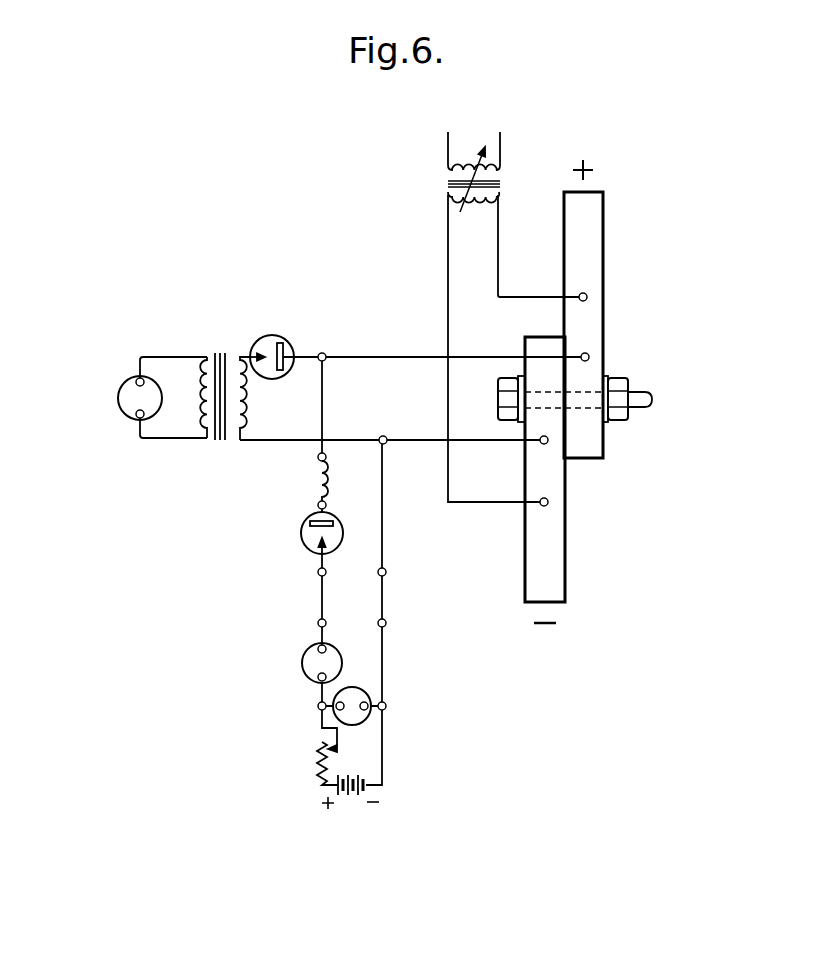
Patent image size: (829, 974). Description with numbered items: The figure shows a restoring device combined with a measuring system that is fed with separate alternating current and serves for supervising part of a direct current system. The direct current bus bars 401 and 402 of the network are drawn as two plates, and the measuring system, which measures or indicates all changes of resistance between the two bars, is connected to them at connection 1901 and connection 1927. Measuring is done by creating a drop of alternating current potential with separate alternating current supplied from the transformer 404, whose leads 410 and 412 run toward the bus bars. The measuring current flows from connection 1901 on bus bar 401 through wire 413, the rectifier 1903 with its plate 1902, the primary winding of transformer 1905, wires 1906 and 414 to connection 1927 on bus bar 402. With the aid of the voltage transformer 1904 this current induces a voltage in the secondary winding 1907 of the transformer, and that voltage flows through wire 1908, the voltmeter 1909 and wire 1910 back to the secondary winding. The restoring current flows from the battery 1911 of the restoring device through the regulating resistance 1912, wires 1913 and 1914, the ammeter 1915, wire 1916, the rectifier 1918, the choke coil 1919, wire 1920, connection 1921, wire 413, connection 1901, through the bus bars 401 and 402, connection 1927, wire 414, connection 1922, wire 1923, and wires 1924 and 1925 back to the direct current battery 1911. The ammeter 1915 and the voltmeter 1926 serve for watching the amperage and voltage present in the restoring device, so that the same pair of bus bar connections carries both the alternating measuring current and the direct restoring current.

The direct current bus bar 401 is at (600, 250).
The direct current bus bar 402 is at (558, 558).
The transformer 404 is at (503, 190).
The lead wire 410 is at (500, 247).
The lead wire 412 is at (447, 280).
The wire 413 is at (420, 354).
The wire 414 is at (478, 434).
The connection 1901 is at (590, 355).
The anode plate of tube 1902 is at (305, 360).
The rectifier 1903 is at (294, 336).
The voltage transformer 1904 is at (225, 352).
The primary winding of transformer 1905 is at (244, 403).
The wire 1906 is at (273, 443).
The secondary winding 1907 is at (193, 403).
The wire 1908 is at (170, 357).
The voltmeter 1909 is at (116, 398).
The wire 1910 is at (165, 442).
The battery 1911 is at (345, 803).
The regulating resistance 1912 is at (317, 765).
The wire 1913 is at (318, 718).
The wire 1914 is at (320, 690).
The ammeter 1915 is at (298, 662).
The wire 1916 is at (318, 631).
The rectifier 1918 is at (304, 535).
The choke coil 1919 is at (320, 482).
The wire 1920 is at (326, 405).
The connection 1921 is at (326, 353).
The connection 1922 is at (386, 445).
The wire 1923 is at (387, 528).
The wire 1924 is at (388, 667).
The wire 1925 is at (388, 749).
The voltmeter 1926 is at (365, 678).
The connection 1927 is at (547, 443).